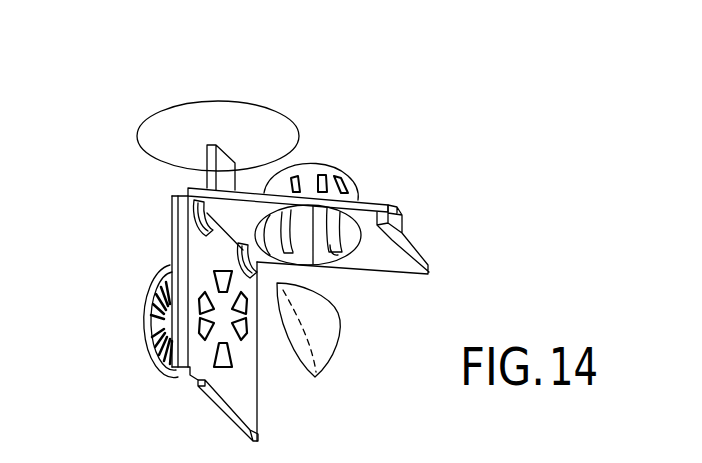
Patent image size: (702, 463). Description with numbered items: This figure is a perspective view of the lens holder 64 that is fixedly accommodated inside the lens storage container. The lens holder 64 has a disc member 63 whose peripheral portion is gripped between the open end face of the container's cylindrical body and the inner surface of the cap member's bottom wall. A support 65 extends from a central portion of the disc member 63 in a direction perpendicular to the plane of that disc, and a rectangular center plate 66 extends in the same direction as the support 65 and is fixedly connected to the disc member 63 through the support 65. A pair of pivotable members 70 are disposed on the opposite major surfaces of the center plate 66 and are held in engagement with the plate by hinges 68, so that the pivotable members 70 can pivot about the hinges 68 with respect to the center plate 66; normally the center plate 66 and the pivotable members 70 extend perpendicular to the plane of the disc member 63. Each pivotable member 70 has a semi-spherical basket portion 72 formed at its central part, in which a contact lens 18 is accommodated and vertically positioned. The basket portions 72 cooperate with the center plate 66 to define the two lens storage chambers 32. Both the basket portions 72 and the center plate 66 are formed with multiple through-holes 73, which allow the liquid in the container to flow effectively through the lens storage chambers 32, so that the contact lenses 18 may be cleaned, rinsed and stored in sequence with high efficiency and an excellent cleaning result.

The contact lens 18 is at (318, 348).
The lens storage chamber 32 is at (303, 251).
The disc member 63 is at (169, 120).
The lens holder 64 is at (328, 117).
The support 65 is at (226, 158).
The center plate 66 is at (247, 406).
The hinge 68 is at (194, 208).
The pivotable member 70 is at (266, 281).
The semi-spherical basket portion 72 is at (317, 172).
The through-hole 73 is at (150, 333).